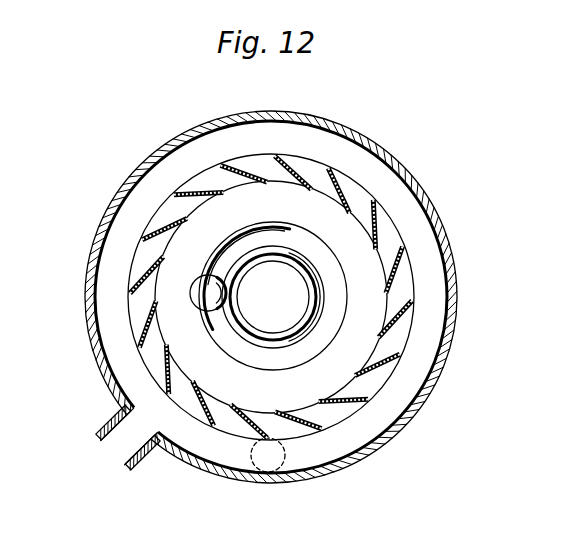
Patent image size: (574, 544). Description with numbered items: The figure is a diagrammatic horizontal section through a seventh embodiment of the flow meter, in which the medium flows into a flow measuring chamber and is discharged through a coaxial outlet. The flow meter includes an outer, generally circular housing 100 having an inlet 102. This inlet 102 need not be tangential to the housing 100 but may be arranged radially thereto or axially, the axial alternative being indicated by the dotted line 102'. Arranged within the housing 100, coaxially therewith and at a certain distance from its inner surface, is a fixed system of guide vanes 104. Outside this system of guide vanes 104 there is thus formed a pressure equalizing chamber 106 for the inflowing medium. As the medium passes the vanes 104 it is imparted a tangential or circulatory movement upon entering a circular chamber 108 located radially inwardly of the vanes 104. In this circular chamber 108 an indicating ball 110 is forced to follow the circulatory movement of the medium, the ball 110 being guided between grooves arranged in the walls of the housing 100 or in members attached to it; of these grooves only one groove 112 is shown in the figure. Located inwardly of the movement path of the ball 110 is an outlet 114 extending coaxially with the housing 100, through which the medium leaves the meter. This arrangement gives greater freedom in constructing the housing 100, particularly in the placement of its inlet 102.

The housing 100 is at (435, 208).
The inlet 102 is at (134, 459).
The axially arranged inlet 102' is at (292, 476).
The guide vanes 104 is at (147, 210).
The pressure equalizing chamber 106 is at (118, 345).
The circular chamber 108 is at (315, 396).
The indicating ball 110 is at (198, 292).
The groove 112 is at (324, 323).
The outlet 114 is at (284, 303).